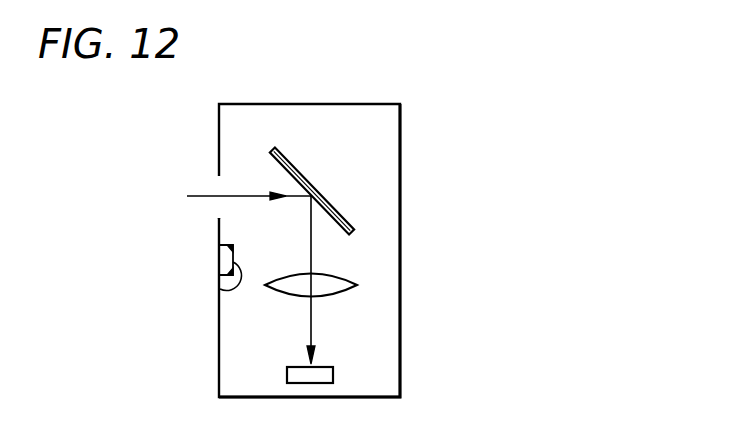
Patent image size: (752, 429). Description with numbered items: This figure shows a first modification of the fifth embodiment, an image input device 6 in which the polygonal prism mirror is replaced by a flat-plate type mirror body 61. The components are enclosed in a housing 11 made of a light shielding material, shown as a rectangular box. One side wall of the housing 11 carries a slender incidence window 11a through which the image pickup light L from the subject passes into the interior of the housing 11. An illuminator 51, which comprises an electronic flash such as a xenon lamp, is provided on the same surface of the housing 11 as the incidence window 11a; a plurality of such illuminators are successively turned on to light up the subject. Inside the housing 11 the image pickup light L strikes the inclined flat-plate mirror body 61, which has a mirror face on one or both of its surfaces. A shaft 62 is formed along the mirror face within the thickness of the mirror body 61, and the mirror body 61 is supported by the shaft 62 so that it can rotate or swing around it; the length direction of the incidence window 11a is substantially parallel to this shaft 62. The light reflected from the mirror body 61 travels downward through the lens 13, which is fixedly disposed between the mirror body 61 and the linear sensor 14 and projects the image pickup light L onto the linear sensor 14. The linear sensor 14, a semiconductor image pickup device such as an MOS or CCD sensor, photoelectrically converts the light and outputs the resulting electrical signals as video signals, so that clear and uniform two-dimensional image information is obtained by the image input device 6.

The image input device 6 is at (400, 102).
The housing 11 is at (400, 248).
The incidence window 11a is at (219, 190).
The image pickup light L is at (203, 198).
The illuminator 51 is at (219, 290).
The mirror body 61 is at (352, 220).
The shaft 62 is at (317, 187).
The lens 13 is at (338, 274).
The linear sensor 14 is at (320, 367).